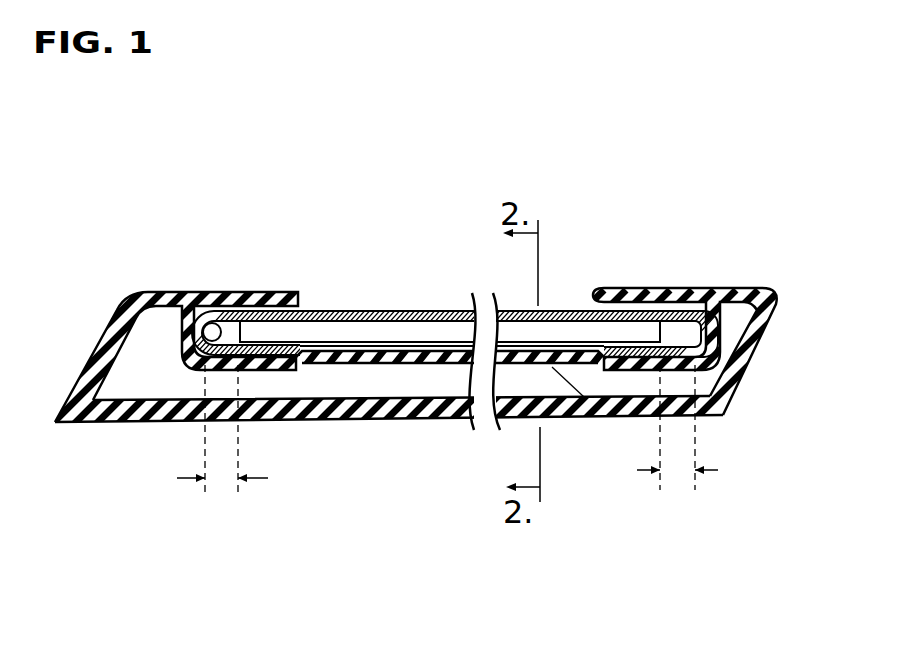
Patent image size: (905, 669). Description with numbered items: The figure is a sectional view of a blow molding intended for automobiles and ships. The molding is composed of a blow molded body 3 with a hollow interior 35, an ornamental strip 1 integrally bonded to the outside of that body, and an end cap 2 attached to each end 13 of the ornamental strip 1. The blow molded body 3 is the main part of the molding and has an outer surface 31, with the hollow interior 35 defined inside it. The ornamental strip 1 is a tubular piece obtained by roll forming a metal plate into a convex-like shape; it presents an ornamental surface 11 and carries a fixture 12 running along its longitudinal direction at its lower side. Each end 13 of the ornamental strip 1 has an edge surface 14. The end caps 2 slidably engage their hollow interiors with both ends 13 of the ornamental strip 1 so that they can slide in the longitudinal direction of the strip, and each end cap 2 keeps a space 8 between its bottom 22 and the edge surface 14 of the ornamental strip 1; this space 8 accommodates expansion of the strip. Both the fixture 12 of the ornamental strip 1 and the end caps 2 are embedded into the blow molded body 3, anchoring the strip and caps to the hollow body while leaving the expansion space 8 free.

The ornamental strip 1 is at (380, 335).
The end cap 2 is at (687, 289).
The blow molded body 3 is at (93, 347).
The space 8 is at (222, 476).
The ornamental surface 11 is at (413, 311).
The fixture 12 is at (587, 420).
The end 13 is at (578, 305).
The edge surface 14 is at (238, 292).
The bottom 22 is at (195, 352).
The outer surface 31 is at (157, 291).
The hollow interior 35 is at (410, 396).